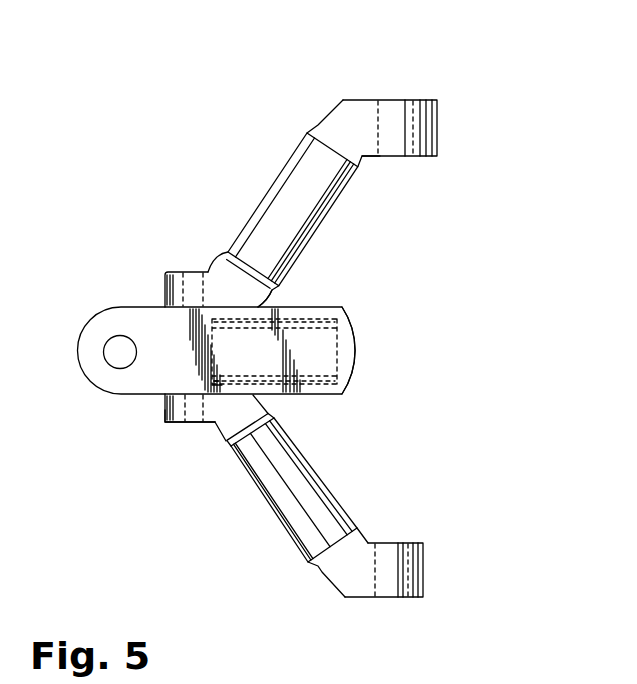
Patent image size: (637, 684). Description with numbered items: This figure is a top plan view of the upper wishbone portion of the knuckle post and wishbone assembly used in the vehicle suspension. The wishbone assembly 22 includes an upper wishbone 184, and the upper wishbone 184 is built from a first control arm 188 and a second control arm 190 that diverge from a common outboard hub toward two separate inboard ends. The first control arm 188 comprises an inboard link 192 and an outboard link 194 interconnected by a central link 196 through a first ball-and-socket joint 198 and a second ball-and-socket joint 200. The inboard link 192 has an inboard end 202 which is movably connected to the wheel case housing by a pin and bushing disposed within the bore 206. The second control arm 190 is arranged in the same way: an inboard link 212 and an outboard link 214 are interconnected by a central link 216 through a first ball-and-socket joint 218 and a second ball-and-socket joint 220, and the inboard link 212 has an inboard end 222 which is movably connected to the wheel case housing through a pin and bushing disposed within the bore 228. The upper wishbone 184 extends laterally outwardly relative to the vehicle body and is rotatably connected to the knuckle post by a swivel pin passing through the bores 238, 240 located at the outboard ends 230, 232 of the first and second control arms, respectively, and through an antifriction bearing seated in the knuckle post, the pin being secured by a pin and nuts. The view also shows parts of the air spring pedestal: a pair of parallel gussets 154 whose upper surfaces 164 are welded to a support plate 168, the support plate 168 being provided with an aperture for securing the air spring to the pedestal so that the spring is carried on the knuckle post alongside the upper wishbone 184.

The wishbone assembly 22 is at (362, 412).
The gussets 154 is at (332, 313).
The upper surfaces 164 is at (358, 318).
The support plate 168 is at (345, 352).
The upper wishbone 184 is at (300, 361).
The first control arm 188 is at (357, 154).
The second control arm 190 is at (365, 537).
The inboard link 192 is at (362, 100).
The outboard link 194 is at (208, 270).
The central link 196 is at (280, 174).
The first ball-and-socket joint 198 is at (318, 125).
The second ball-and-socket joint 200 is at (272, 290).
The inboard end 202 is at (437, 123).
The bore 206 is at (393, 110).
The inboard link 212 is at (357, 597).
The outboard link 214 is at (167, 422).
The central link 216 is at (267, 500).
The first ball-and-socket joint 218 is at (220, 433).
The second ball-and-socket joint 220 is at (320, 568).
The inboard end 222 is at (423, 570).
The bore 228 is at (392, 592).
The outboard end 230 is at (165, 280).
The outboard end 232 is at (167, 398).
The bore 238 is at (188, 270).
The bore 240 is at (183, 432).